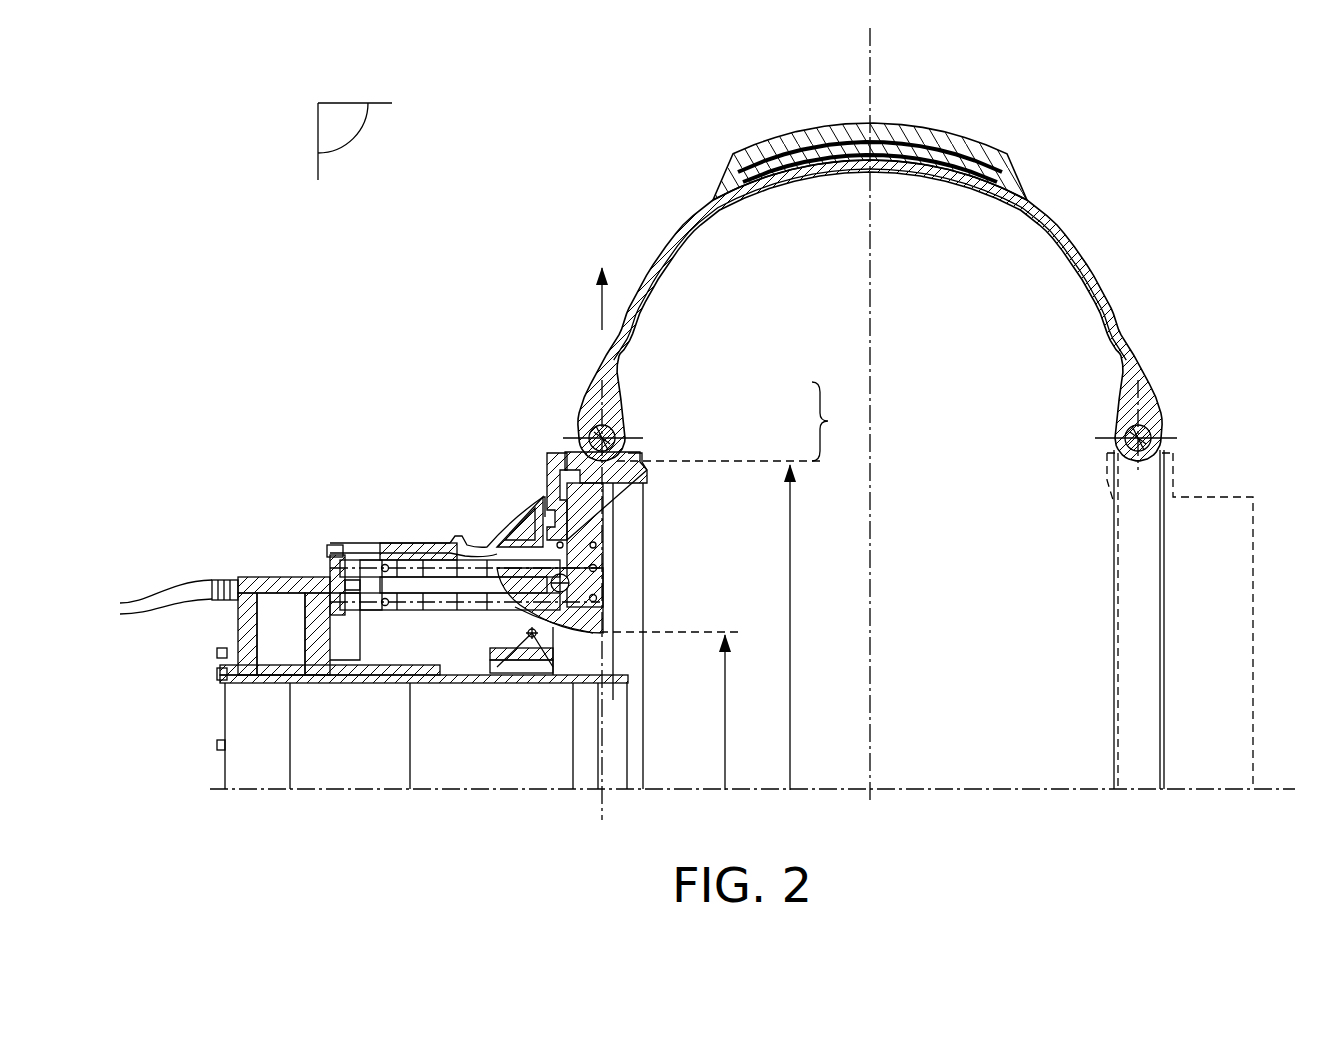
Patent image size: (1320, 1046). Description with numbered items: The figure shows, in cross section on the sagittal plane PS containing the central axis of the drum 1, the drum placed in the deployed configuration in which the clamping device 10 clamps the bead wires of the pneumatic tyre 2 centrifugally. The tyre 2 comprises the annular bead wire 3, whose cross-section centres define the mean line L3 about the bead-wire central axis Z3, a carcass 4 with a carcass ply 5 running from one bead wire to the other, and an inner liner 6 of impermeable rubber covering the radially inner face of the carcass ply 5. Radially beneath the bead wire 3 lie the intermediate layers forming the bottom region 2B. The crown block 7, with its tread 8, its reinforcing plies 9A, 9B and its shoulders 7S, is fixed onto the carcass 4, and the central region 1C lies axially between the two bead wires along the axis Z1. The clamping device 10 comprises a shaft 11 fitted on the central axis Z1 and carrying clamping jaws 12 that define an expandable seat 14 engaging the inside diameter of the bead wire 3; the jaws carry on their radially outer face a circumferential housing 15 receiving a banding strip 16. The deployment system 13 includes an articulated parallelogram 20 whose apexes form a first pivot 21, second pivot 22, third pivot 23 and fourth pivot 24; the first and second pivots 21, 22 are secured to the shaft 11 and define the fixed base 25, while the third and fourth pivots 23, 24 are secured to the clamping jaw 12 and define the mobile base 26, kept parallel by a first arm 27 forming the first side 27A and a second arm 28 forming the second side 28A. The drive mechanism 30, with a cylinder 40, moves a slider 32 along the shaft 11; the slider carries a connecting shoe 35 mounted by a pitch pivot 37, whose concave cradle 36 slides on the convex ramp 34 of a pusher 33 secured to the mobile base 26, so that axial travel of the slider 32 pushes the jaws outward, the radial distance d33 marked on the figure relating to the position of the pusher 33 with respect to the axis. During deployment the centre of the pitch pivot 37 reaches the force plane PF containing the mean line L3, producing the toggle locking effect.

The drum 1 is at (242, 247).
The tyre 2 is at (877, 255).
The bead wire 3 is at (617, 430).
The carcass 4 is at (683, 225).
The carcass ply 5 is at (620, 387).
The inner liner 6 is at (670, 255).
The crown block 7 is at (870, 149).
The shoulders 7S is at (733, 160).
The tread 8 is at (778, 150).
The reinforcing ply 9A is at (748, 192).
The reinforcing ply 9B is at (834, 148).
The clamping device 10 is at (433, 520).
The shaft 11 is at (406, 740).
The clamping jaws 12 is at (600, 528).
The deployment system 13 is at (303, 578).
The expandable seat 14 is at (560, 458).
The circumferential housing 15 is at (643, 483).
The banding strip 16 is at (560, 472).
The articulated parallelogram 20 is at (413, 600).
The first pivot 21 is at (360, 562).
The second pivot 22 is at (387, 568).
The third pivot 23 is at (600, 600).
The fourth pivot 24 is at (600, 567).
The fixed base 25 is at (363, 594).
The mobile base 26 is at (614, 582).
The first arm 27 is at (403, 600).
The first side 27A is at (420, 620).
The second arm 28 is at (412, 555).
The second side 28A is at (455, 538).
The drive mechanism 30 is at (227, 625).
The slider 32 is at (523, 650).
The pusher 33 is at (600, 555).
The ramp 34 is at (572, 636).
The connecting shoe 35 is at (553, 630).
The concave cradle 36 is at (523, 617).
The pitch pivot 37 is at (532, 638).
The cylinder 40 is at (247, 587).
The central region 1C is at (977, 704).
The bottom region 2B is at (835, 421).
The sagittal plane PS is at (352, 137).
The force plane PF is at (602, 802).
The mean line L3 is at (582, 412).
The carrier distance d33 is at (685, 711).
The central axis of the drum Z1 is at (1239, 827).
The bead-wire central axis Z3 is at (1218, 789).